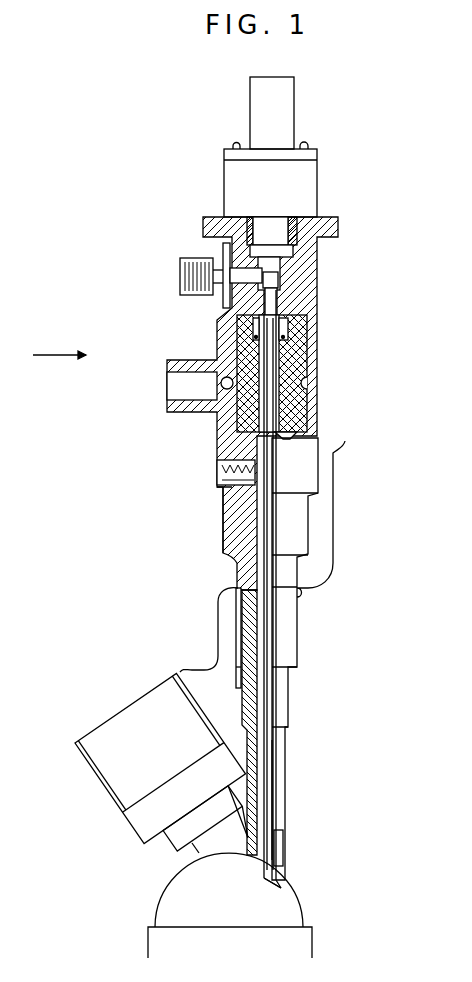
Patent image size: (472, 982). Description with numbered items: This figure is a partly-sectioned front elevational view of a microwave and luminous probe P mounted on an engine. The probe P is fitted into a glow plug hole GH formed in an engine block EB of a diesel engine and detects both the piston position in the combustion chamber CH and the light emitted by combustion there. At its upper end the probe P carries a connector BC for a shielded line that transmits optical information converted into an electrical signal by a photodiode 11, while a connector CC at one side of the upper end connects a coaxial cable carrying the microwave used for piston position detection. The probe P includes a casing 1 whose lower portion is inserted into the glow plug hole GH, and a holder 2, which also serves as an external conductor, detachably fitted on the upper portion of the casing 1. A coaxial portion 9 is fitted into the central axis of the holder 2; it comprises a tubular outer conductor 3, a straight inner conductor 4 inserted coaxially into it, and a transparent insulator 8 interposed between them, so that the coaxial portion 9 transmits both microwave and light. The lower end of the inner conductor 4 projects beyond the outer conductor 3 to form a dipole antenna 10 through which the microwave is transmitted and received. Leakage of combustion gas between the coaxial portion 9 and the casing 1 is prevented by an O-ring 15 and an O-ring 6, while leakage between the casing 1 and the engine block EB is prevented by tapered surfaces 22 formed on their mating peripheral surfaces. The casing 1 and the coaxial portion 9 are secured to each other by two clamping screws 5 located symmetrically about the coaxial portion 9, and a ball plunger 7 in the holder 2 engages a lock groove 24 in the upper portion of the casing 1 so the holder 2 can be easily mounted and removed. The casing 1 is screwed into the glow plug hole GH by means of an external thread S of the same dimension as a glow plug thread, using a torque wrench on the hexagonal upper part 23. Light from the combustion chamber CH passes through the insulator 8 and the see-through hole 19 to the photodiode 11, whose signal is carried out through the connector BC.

The connector BC is at (279, 101).
The connector CC is at (227, 247).
The photodiode 11 is at (288, 249).
The see-through hole 19 is at (275, 263).
The holder 2 is at (305, 280).
The upper part of the casing 23 is at (300, 323).
The O-ring 15 is at (300, 340).
The casing 1 is at (295, 365).
The lock groove 24 is at (308, 384).
The tubular outer conductor 3 is at (284, 407).
The straight inner conductor 4 is at (284, 434).
The ball plunger 7 is at (225, 378).
The clamping screw 5 is at (222, 462).
The O-ring 6 is at (232, 488).
The external thread S is at (240, 617).
The engine block EB is at (227, 672).
The transparent insulator 8 is at (266, 628).
The tapered surfaces 22 is at (288, 731).
The glow plug hole GH is at (288, 792).
The coaxial portion 9 is at (280, 845).
The dipole antenna 10 is at (283, 884).
The microwave and luminous probe P is at (49, 354).
The combustion chamber CH is at (190, 887).